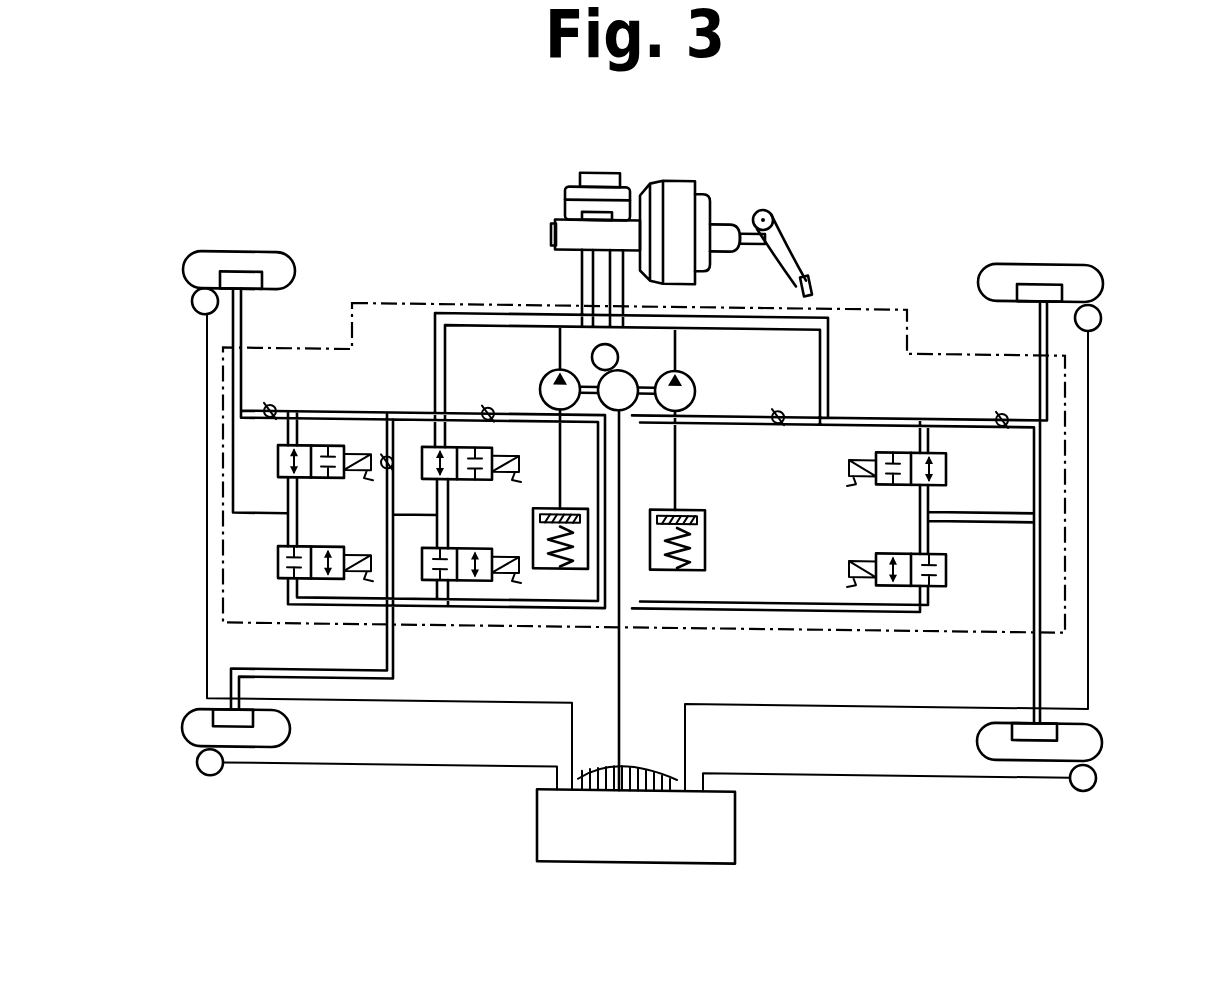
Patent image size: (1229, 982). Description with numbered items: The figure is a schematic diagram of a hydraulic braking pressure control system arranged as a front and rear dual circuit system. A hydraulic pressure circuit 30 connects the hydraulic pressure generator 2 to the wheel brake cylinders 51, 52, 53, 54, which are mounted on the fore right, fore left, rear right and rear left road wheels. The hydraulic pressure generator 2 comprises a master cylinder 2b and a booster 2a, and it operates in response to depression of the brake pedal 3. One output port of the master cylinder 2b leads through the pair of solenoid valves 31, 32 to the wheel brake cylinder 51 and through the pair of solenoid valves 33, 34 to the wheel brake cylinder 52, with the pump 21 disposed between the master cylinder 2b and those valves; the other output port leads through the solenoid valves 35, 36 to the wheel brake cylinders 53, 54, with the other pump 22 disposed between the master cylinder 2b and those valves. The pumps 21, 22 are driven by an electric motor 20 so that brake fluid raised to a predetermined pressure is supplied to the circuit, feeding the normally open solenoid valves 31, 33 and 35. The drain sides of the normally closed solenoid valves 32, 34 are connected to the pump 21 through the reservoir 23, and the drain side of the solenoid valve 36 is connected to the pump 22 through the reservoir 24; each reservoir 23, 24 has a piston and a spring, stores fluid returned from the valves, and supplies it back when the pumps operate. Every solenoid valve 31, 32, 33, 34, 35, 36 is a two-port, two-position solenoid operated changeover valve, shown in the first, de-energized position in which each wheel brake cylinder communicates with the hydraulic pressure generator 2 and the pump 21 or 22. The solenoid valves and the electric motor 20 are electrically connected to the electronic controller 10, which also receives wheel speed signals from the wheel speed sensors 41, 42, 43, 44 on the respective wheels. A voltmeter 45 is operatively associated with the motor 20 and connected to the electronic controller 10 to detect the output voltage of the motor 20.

The hydraulic pressure generator 2 is at (586, 183).
The booster 2a is at (700, 274).
The master cylinder 2b is at (607, 237).
The brake pedal 3 is at (783, 249).
The electronic controller 10 is at (735, 824).
The electric motor 20 is at (632, 370).
The pump 21 is at (543, 380).
The pump 22 is at (693, 378).
The reservoir 23 is at (558, 569).
The reservoir 24 is at (668, 569).
The hydraulic pressure circuit 30 is at (885, 306).
The solenoid valve 31 is at (318, 449).
The solenoid valve 32 is at (318, 550).
The solenoid valve 33 is at (455, 449).
The solenoid valve 34 is at (452, 550).
The solenoid valve 35 is at (882, 449).
The solenoid valve 36 is at (900, 550).
The wheel speed sensor 41 is at (192, 313).
The wheel speed sensor 42 is at (220, 781).
The wheel speed sensor 43 is at (1104, 310).
The wheel speed sensor 44 is at (1085, 785).
The voltmeter 45 is at (593, 349).
The wheel brake cylinder 51 is at (248, 288).
The wheel brake cylinder 52 is at (255, 727).
The wheel brake cylinder 53 is at (1032, 292).
The wheel brake cylinder 54 is at (977, 734).